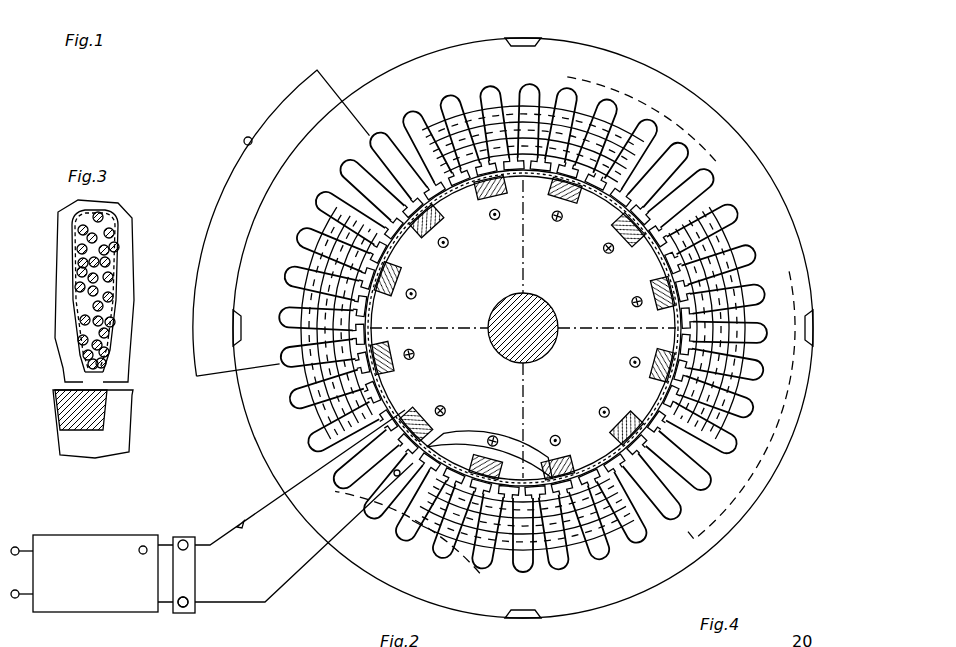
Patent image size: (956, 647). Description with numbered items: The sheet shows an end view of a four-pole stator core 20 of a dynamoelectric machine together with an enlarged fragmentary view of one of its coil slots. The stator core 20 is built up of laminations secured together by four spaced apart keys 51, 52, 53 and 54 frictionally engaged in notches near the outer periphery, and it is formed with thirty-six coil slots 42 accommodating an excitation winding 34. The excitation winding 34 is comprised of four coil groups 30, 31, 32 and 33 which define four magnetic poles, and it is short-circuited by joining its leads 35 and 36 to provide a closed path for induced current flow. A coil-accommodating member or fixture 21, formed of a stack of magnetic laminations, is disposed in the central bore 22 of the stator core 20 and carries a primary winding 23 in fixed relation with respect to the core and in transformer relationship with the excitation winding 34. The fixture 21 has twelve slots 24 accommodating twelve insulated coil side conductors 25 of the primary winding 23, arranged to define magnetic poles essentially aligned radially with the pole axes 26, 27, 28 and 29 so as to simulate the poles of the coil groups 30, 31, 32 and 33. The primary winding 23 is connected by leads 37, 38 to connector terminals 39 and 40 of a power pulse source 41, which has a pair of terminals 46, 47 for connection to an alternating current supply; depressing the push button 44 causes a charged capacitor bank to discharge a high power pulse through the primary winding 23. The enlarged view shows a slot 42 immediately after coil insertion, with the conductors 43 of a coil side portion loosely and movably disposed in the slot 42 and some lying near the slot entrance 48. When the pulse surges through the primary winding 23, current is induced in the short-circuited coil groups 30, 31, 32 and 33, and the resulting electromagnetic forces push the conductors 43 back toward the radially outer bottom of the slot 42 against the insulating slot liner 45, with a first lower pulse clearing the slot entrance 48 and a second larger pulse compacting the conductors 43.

In FIG. 1, the stator core 20 is at (762, 153).
In FIG. 3, the stator core 20 is at (62, 206).
In FIG. 1, the coil-accommodating member 21 is at (606, 303).
In FIG. 1, the central bore 22 is at (383, 393).
In FIG. 1, the primary winding 23 is at (575, 206).
In FIG. 1, the slots 24 is at (433, 209).
In FIG. 3, the slots 24 is at (105, 410).
In FIG. 1, the insulated coil side conductors 25 is at (399, 279).
In FIG. 3, the insulated coil side conductors 25 is at (65, 412).
In FIG. 1, the pole axis 26 is at (527, 262).
In FIG. 1, the pole axis 27 is at (605, 330).
In FIG. 1, the pole axis 28 is at (527, 392).
In FIG. 1, the pole axis 29 is at (452, 330).
In FIG. 1, the coil group 30 is at (556, 82).
In FIG. 1, the coil group 31 is at (766, 300).
In FIG. 1, the coil group 32 is at (582, 556).
In FIG. 1, the coil group 33 is at (284, 345).
In FIG. 1, the excitation winding 34 is at (468, 103).
In FIG. 1, the lead 35 is at (232, 219).
In FIG. 1, the lead 36 is at (267, 110).
In FIG. 1, the lead 37 is at (262, 513).
In FIG. 1, the lead 38 is at (312, 560).
In FIG. 1, the connector terminal 39 is at (185, 540).
In FIG. 1, the connector terminal 40 is at (183, 608).
In FIG. 1, the power pulse source 41 is at (86, 533).
In FIG. 1, the coil slot 42 is at (680, 230).
In FIG. 3, the coil slot 42 is at (117, 287).
In FIG. 3, the conductors 43 is at (112, 250).
In FIG. 1, the push button 44 is at (144, 546).
In FIG. 3, the insulating slot liner 45 is at (110, 322).
In FIG. 1, the terminal 46 is at (17, 546).
In FIG. 1, the terminal 47 is at (17, 598).
In FIG. 3, the slot entrance 48 is at (97, 376).
In FIG. 1, the key 51 is at (536, 39).
In FIG. 1, the key 52 is at (813, 335).
In FIG. 1, the key 53 is at (535, 621).
In FIG. 1, the key 54 is at (237, 323).